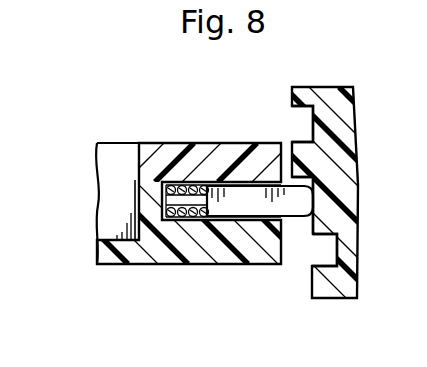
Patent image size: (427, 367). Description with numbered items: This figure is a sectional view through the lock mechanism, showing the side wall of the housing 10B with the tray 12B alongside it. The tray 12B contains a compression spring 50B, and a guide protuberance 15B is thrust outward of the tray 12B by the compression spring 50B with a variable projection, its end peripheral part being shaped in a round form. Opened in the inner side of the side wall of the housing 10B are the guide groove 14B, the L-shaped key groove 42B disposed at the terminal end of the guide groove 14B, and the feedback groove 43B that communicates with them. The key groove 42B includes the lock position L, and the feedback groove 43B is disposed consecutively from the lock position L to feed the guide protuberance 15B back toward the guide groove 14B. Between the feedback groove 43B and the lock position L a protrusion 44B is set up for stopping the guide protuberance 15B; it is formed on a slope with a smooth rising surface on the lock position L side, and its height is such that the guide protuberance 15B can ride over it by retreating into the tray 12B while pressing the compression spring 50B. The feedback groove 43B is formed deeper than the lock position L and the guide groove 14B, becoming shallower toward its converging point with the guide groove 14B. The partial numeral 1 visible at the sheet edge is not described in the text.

The housing 10B is at (348, 225).
The tray 12B is at (228, 264).
The guide groove 14B is at (309, 123).
The guide protuberance 15B is at (251, 194).
The key groove 42B is at (278, 262).
The feedback groove 43B is at (331, 253).
The protrusion 44B is at (309, 222).
The compression spring 50B is at (177, 216).
The lock position L is at (319, 207).
The partial numeral 1 is at (422, 63).